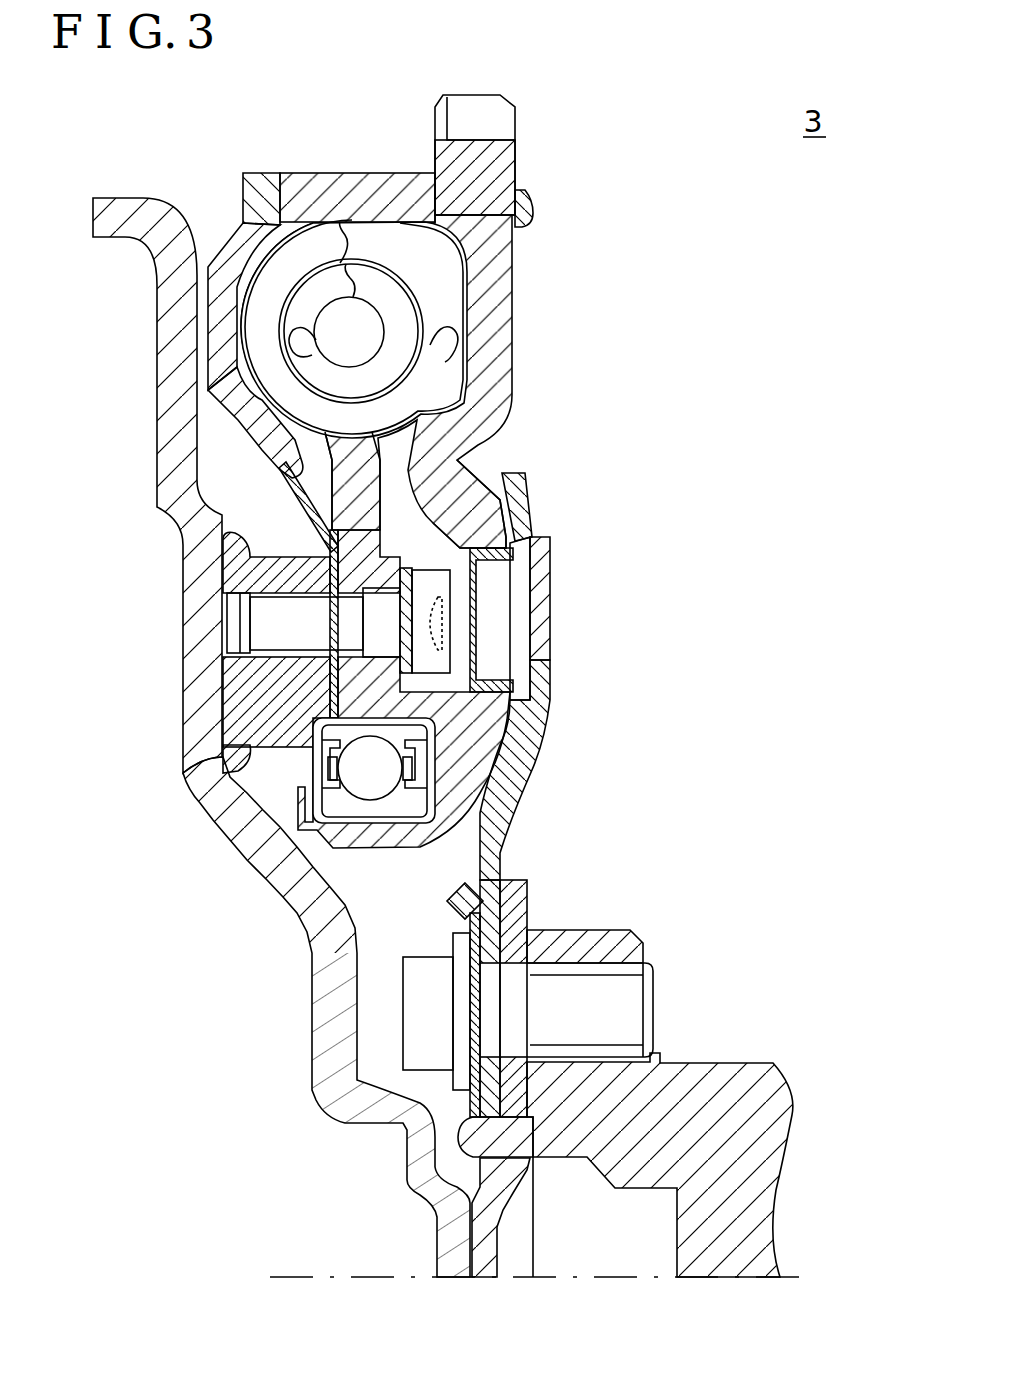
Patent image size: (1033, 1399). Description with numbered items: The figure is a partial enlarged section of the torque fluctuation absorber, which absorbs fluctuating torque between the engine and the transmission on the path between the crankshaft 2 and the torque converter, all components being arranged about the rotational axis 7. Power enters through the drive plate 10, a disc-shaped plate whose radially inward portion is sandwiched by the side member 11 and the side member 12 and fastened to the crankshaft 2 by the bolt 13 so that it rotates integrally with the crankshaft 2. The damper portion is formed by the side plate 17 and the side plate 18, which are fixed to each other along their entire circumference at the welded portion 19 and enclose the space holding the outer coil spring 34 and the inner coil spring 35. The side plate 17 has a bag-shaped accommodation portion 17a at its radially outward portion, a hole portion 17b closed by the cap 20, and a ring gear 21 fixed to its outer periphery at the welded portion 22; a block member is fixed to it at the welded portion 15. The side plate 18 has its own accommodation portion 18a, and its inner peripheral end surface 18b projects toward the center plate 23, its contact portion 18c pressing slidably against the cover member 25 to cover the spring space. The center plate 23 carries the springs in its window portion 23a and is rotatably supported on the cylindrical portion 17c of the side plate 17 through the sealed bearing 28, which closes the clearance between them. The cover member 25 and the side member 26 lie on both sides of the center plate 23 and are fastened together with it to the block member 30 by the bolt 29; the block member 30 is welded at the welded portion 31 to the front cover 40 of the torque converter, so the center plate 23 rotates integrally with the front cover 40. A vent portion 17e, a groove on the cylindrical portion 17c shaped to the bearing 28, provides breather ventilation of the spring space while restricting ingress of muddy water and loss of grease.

The crankshaft 2 is at (780, 1118).
The rotational axis 7 is at (300, 1276).
The drive plate 10 is at (520, 823).
The side member 11 is at (470, 893).
The side member 12 is at (512, 913).
The bolt 13 is at (620, 1008).
The welded portion 15 is at (472, 415).
The side plate 17 is at (345, 190).
The accommodation portion 17a is at (493, 327).
The hole portion 17b is at (540, 548).
The cylindrical portion 17c is at (272, 865).
The vent portion 17e is at (410, 707).
The side plate 18 is at (265, 205).
The accommodation portion 18a is at (220, 325).
The inner peripheral end surface 18b is at (335, 492).
The contact portion 18c is at (250, 443).
The welded portion 19 is at (275, 175).
The cap 20 is at (468, 617).
The ring gear 21 is at (503, 168).
The welded portion 22 is at (535, 208).
The center plate 23 is at (540, 705).
The window portion 23a is at (360, 468).
The cover member 25 is at (310, 492).
The side member 26 is at (474, 670).
The bearing 28 is at (222, 760).
The bolt 29 is at (268, 627).
The block member 30 is at (255, 710).
The welded portion 31 is at (195, 545).
The outer coil spring 34 is at (437, 300).
The inner coil spring 35 is at (397, 347).
The front cover 40 is at (200, 600).